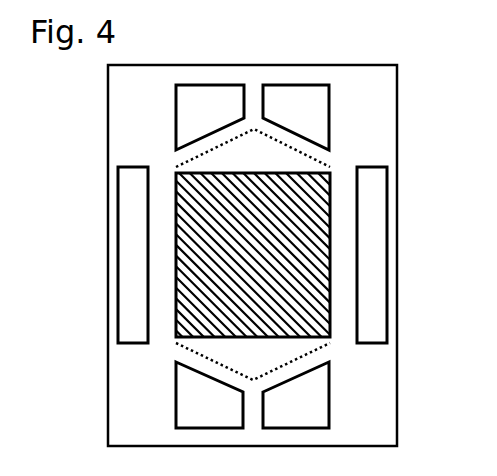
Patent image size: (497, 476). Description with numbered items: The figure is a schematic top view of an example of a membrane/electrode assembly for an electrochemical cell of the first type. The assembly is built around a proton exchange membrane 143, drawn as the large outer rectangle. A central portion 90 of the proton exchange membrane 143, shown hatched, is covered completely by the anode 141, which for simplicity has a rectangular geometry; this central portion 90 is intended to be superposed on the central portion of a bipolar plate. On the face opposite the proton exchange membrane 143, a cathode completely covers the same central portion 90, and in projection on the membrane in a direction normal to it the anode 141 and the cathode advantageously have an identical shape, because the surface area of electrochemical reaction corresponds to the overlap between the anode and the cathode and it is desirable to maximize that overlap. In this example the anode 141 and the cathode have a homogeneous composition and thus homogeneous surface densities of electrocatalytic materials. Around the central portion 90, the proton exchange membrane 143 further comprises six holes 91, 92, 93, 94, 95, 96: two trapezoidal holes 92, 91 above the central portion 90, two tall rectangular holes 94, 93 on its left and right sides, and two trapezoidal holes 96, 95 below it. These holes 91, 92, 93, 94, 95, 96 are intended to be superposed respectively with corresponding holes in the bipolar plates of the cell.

The central portion 90 is at (165, 256).
The hole 91 is at (309, 121).
The hole 92 is at (215, 121).
The hole 93 is at (386, 214).
The hole 94 is at (146, 214).
The hole 95 is at (310, 414).
The hole 96 is at (216, 414).
The anode 141 is at (344, 258).
The proton exchange membrane 143 is at (407, 255).